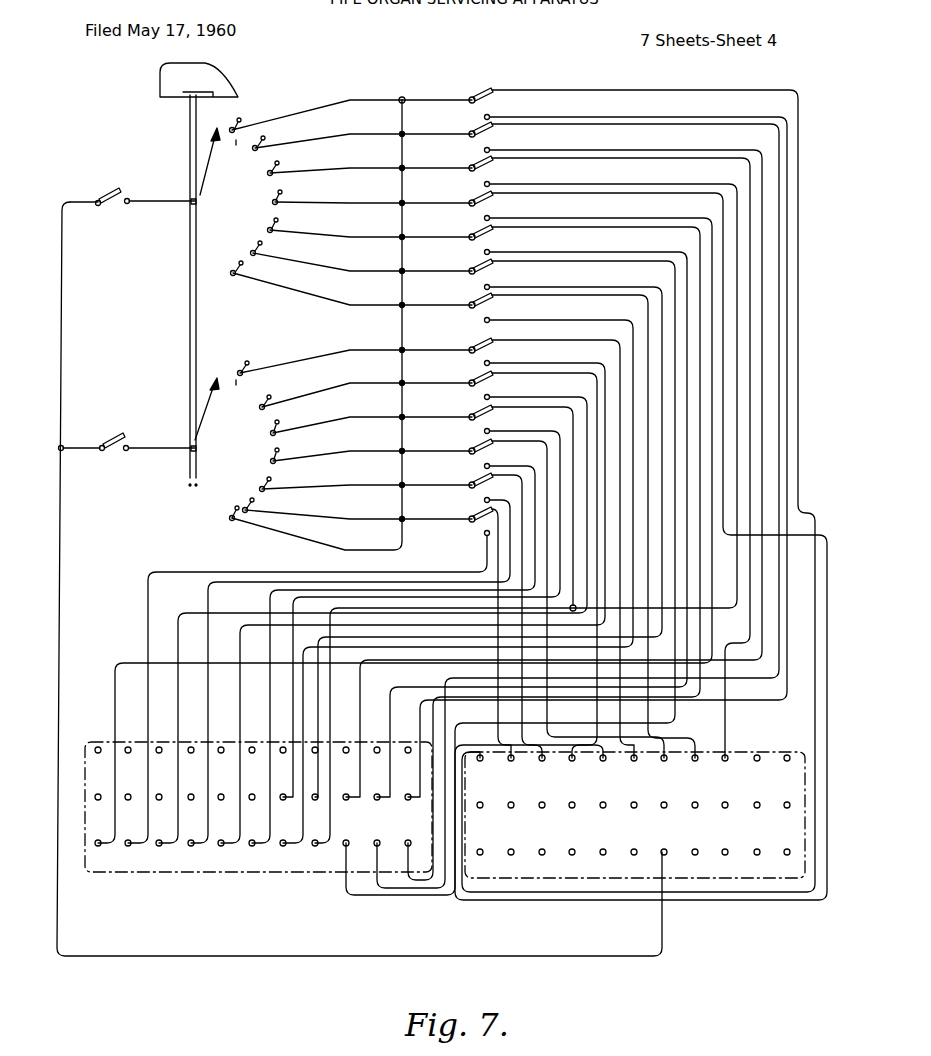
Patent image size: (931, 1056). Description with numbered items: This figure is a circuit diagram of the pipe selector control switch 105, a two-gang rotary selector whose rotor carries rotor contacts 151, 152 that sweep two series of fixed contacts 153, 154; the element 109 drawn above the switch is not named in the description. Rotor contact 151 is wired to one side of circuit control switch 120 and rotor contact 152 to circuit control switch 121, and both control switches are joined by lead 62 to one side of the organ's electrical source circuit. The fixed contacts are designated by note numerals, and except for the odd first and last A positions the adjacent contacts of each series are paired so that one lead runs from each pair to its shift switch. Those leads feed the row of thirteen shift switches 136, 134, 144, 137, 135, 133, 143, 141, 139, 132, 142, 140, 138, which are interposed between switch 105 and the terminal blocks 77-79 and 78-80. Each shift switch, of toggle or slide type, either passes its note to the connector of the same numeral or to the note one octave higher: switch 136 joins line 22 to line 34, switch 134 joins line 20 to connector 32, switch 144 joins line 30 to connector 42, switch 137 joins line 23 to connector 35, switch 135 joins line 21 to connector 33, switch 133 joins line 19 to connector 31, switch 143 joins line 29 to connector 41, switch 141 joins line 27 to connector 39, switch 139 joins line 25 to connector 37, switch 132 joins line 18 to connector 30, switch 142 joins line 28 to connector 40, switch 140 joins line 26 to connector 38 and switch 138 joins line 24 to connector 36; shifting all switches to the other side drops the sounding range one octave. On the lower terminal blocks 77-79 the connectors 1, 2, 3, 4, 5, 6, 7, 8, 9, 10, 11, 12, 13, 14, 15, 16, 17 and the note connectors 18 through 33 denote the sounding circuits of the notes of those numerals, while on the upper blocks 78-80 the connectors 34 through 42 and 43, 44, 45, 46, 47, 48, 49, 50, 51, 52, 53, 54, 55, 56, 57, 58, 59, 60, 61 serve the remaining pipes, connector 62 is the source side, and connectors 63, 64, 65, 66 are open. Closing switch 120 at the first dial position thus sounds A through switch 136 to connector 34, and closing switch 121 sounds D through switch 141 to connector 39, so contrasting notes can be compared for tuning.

The pipe selector control switch 105 is at (183, 165).
The lamp head 109 is at (212, 78).
The circuit control switch 120 is at (108, 192).
The circuit control switch 121 is at (108, 441).
The rotor contact 151 is at (207, 168).
The rotor contact 152 is at (207, 410).
The series of fixed contacts 153 is at (245, 231).
The series of fixed contacts 154 is at (252, 466).
The lead 62 is at (62, 292).
The shift switch 136 is at (478, 97).
The shift switch 134 is at (478, 131).
The shift switch 144 is at (478, 165).
The shift switch 137 is at (478, 200).
The shift switch 135 is at (478, 234).
The shift switch 133 is at (478, 268).
The shift switch 143 is at (478, 302).
The shift switch 141 is at (478, 347).
The shift switch 139 is at (478, 380).
The shift switch 132 is at (478, 414).
The shift switch 142 is at (478, 448).
The shift switch 140 is at (447, 477).
The shift switch 138 is at (447, 511).
The note line 18 is at (290, 690).
The note line 19 is at (318, 685).
The note line 20 is at (740, 668).
The note line 21 is at (396, 690).
The note line 22 is at (794, 700).
The note line 23 is at (718, 627).
The note line 24 is at (485, 540).
The note line 25 is at (190, 612).
The note line 26 is at (496, 494).
The note line 27 is at (232, 642).
The note line 28 is at (496, 460).
The note line 29 is at (344, 658).
The note line 30 is at (728, 578).
The note connector 31 is at (500, 263).
The note connector 32 is at (500, 126).
The note connector 33 is at (500, 229).
The note line 34 is at (775, 88).
The note connector 35 is at (500, 195).
The note connector 36 is at (480, 512).
The note connector 37 is at (500, 375).
The note connector 38 is at (480, 478).
The note connector 39 is at (500, 342).
The note connector 40 is at (500, 443).
The note connector 41 is at (500, 297).
The note connector 42 is at (500, 160).
The terminal blocks 77-79 is at (240, 872).
The terminal blocks 78-80 is at (718, 880).
The sounding circuit connector 1 is at (98, 759).
The sounding circuit connector 2 is at (128, 759).
The sounding circuit connector 3 is at (159, 759).
The sounding circuit connector 4 is at (191, 759).
The sounding circuit connector 5 is at (221, 759).
The sounding circuit connector 6 is at (252, 759).
The sounding circuit connector 7 is at (283, 759).
The sounding circuit connector 8 is at (315, 759).
The sounding circuit connector 9 is at (346, 759).
The sounding circuit connector 10 is at (377, 759).
The sounding circuit connector 11 is at (408, 759).
The sounding circuit connector 12 is at (98, 806).
The sounding circuit connector 13 is at (128, 806).
The sounding circuit connector 14 is at (159, 806).
The sounding circuit connector 15 is at (191, 806).
The sounding circuit connector 16 is at (221, 806).
The sounding circuit connector 17 is at (252, 806).
The sounding circuit connector 43 is at (757, 767).
The sounding circuit connector 44 is at (787, 767).
The sounding circuit connector 45 is at (480, 814).
The sounding circuit connector 46 is at (511, 814).
The sounding circuit connector 47 is at (542, 814).
The sounding circuit connector 48 is at (572, 814).
The sounding circuit connector 49 is at (603, 814).
The sounding circuit connector 50 is at (634, 814).
The sounding circuit connector 51 is at (664, 814).
The sounding circuit connector 52 is at (695, 814).
The sounding circuit connector 53 is at (725, 814).
The sounding circuit connector 54 is at (757, 814).
The sounding circuit connector 55 is at (787, 814).
The sounding circuit connector 56 is at (480, 861).
The sounding circuit connector 57 is at (511, 861).
The sounding circuit connector 58 is at (542, 861).
The sounding circuit connector 59 is at (572, 861).
The sounding circuit connector 60 is at (603, 861).
The sounding circuit connector 61 is at (634, 861).
The open connector 63 is at (695, 861).
The open connector 64 is at (725, 861).
The open connector 65 is at (757, 861).
The open connector 66 is at (787, 861).